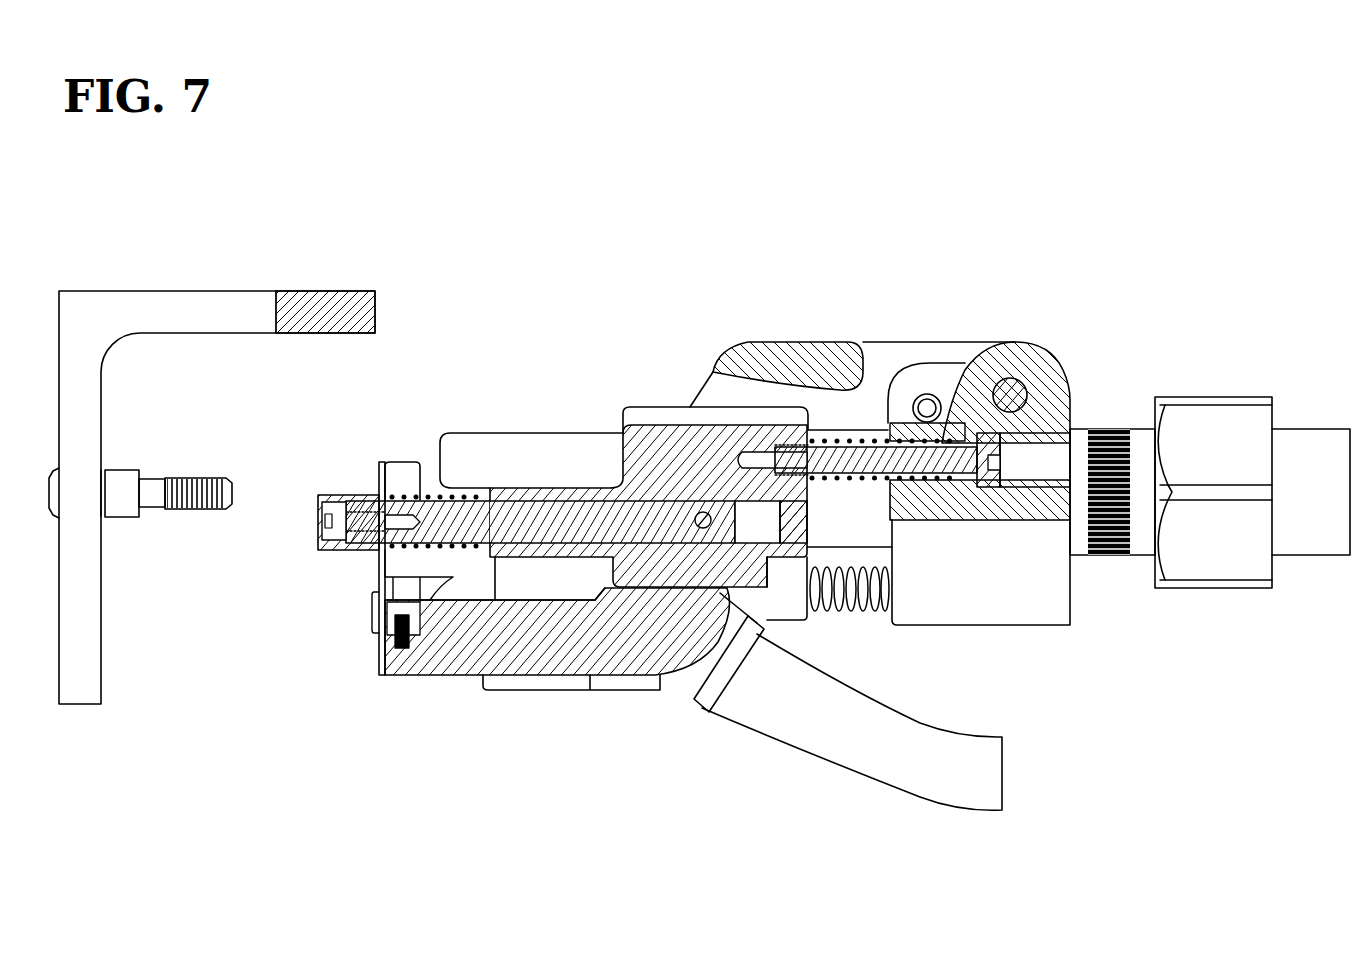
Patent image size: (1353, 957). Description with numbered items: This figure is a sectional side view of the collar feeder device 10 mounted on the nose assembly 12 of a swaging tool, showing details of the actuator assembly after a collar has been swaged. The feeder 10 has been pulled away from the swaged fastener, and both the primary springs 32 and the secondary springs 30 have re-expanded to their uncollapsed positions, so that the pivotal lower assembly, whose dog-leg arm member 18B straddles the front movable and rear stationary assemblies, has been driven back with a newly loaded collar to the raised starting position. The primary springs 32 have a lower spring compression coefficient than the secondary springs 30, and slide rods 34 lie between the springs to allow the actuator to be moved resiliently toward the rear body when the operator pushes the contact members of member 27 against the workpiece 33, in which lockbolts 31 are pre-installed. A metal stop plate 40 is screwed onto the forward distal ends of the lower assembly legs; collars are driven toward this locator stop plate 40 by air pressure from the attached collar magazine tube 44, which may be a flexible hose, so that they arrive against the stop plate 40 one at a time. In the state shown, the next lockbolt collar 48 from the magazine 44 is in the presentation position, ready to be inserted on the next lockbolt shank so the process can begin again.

The collar feeder device 10 is at (782, 328).
The nose assembly 12 is at (556, 432).
The lower assembly arm member 18B is at (652, 668).
The member 27 is at (355, 494).
The secondary spring 30 is at (1015, 376).
The lockbolt 31 is at (152, 470).
The primary spring 32 is at (455, 493).
The workpiece 33 is at (178, 283).
The slide rod 34 is at (690, 548).
The stop plate 40 is at (379, 655).
The collar magazine tube 44 is at (886, 790).
The lockbolt collar 48 is at (121, 470).